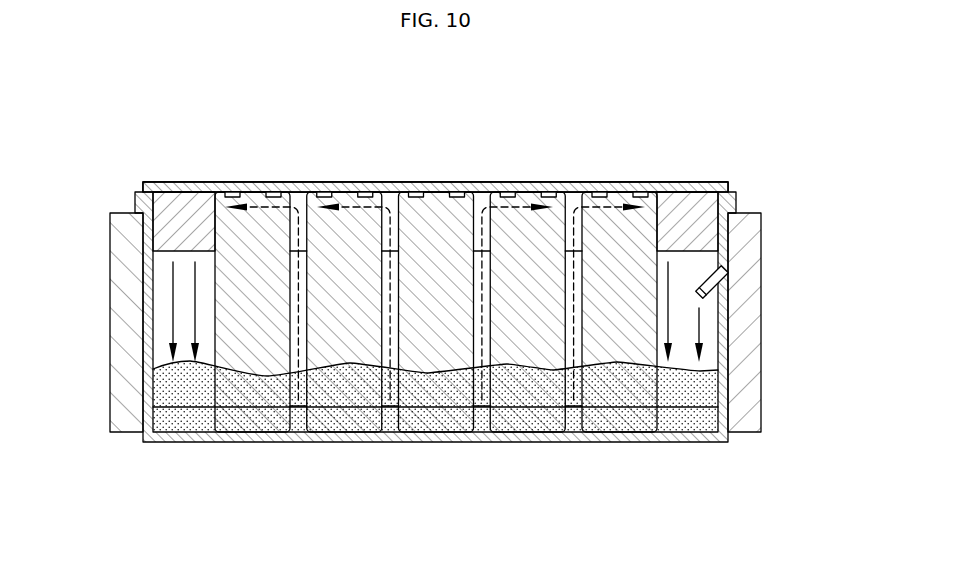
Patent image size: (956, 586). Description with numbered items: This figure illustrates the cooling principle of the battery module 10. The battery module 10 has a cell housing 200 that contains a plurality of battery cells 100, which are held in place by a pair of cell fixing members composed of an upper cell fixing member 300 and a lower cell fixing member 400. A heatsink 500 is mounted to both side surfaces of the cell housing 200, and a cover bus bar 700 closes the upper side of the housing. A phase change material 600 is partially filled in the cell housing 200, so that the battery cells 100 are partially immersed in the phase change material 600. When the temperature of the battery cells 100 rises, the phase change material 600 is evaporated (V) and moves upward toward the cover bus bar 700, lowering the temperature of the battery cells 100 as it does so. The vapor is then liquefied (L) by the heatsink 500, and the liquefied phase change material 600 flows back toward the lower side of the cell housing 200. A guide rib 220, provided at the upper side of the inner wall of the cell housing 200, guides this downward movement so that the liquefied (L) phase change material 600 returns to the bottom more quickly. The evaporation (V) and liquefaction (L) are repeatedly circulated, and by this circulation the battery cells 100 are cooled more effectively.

The battery module 10 is at (172, 135).
The battery cell 100 is at (437, 215).
The cell housing 200 is at (723, 345).
The guide rib 220 is at (714, 288).
The upper cell fixing member 300 is at (700, 226).
The lower cell fixing member 400 is at (705, 418).
The heatsink 500 is at (123, 308).
The phase change material 600 is at (705, 385).
The cover bus bar 700 is at (668, 182).
The liquefaction L is at (172, 327).
The evaporation V is at (297, 320).